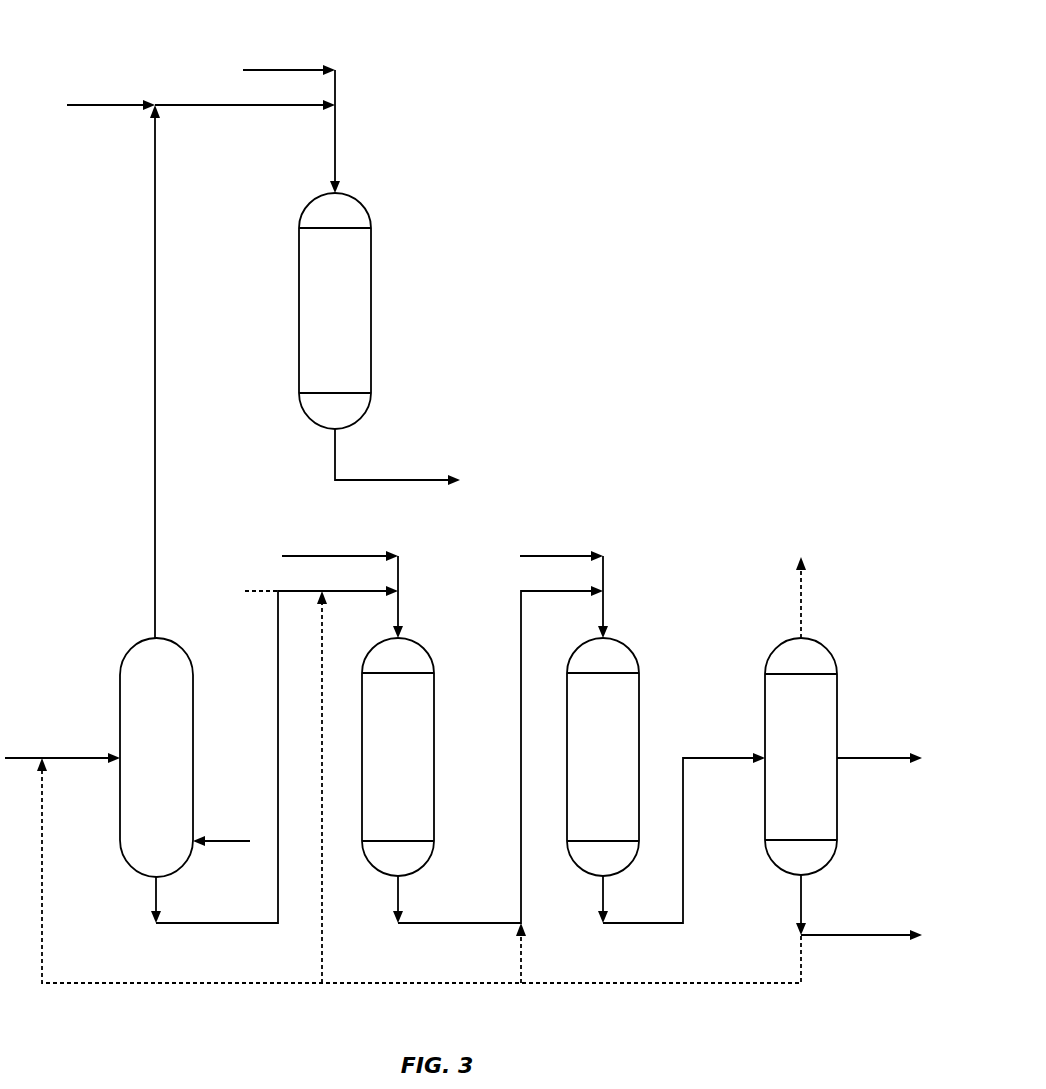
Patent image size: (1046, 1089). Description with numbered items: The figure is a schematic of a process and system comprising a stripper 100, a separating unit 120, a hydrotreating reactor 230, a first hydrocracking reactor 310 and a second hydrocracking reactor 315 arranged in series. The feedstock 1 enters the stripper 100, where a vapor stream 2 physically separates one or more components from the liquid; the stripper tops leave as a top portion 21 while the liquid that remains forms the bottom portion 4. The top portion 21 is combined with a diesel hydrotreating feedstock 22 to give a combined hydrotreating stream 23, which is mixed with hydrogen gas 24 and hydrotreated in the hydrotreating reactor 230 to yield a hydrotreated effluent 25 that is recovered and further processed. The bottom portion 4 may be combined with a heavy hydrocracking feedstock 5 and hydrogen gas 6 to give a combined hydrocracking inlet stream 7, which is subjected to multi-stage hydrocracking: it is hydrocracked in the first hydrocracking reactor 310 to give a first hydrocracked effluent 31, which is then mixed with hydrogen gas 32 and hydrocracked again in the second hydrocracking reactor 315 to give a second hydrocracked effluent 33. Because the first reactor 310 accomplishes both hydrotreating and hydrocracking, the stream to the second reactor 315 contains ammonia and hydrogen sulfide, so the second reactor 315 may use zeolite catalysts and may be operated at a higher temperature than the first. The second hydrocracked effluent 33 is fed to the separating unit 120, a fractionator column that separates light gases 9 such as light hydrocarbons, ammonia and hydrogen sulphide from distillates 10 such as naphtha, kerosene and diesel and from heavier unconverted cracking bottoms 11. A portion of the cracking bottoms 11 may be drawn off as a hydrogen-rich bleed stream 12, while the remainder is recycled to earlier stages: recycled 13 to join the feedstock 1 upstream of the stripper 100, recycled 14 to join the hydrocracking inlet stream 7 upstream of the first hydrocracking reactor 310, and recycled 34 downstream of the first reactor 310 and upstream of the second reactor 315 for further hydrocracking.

The feedstock 1 is at (18, 757).
The vapor stream 2 is at (235, 838).
The bottom portion 4 is at (155, 905).
The heavy hydrocracking feedstock 5 is at (258, 592).
The hydrogen gas 6 is at (335, 557).
The hydrocracking inlet stream 7 is at (399, 602).
The light gases 9 is at (802, 606).
The distillates 10 is at (887, 757).
The cracking bottoms 11 is at (800, 908).
The bleed stream 12 is at (872, 935).
The recycle 13 is at (217, 982).
The recycle 14 is at (323, 930).
The top portion 21 is at (155, 608).
The diesel hydrotreating feedstock 22 is at (108, 105).
The combined hydrotreating stream 23 is at (233, 108).
The hydrogen gas 24 is at (285, 70).
The hydrotreated effluent 25 is at (428, 480).
The first hydrocracked effluent 31 is at (466, 923).
The hydrogen gas 32 is at (563, 557).
The second hydrocracked effluent 33 is at (602, 907).
The recycle 34 is at (520, 964).
The stripper 100 is at (135, 771).
The separating unit 120 is at (781, 771).
The hydrotreating reactor 230 is at (315, 326).
The first hydrocracking reactor 310 is at (378, 771).
The second hydrocracking reactor 315 is at (583, 771).